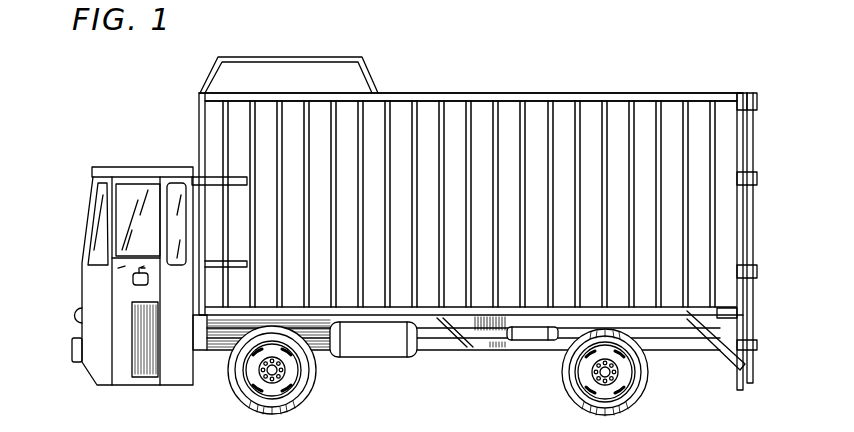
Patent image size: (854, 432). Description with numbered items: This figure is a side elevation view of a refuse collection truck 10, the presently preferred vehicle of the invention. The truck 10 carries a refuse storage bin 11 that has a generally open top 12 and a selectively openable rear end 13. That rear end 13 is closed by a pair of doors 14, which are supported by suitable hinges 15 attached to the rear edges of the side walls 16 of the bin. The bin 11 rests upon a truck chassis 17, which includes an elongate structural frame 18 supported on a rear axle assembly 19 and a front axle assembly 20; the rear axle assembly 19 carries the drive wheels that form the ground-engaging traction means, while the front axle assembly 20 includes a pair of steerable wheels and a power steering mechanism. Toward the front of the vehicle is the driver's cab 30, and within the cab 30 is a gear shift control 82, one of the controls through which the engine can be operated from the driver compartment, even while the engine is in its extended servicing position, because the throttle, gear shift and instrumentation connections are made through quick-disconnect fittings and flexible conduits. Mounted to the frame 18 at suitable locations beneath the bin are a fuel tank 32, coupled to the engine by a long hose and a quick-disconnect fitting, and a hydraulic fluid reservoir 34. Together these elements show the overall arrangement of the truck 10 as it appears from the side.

The refuse collection truck 10 is at (103, 125).
The refuse storage bin 11 is at (510, 110).
The open top 12 is at (397, 95).
The rear end 13 is at (756, 144).
The doors 14 is at (755, 238).
The hinges 15 is at (757, 178).
The side walls 16 is at (643, 112).
The truck chassis 17 is at (690, 353).
The structural frame 18 is at (485, 347).
The rear axle assembly 19 is at (572, 398).
The front axle assembly 20 is at (322, 394).
The driver's cab 30 is at (92, 295).
The fuel tank 32 is at (385, 357).
The hydraulic fluid reservoir 34 is at (540, 340).
The gear shift control 82 is at (130, 283).